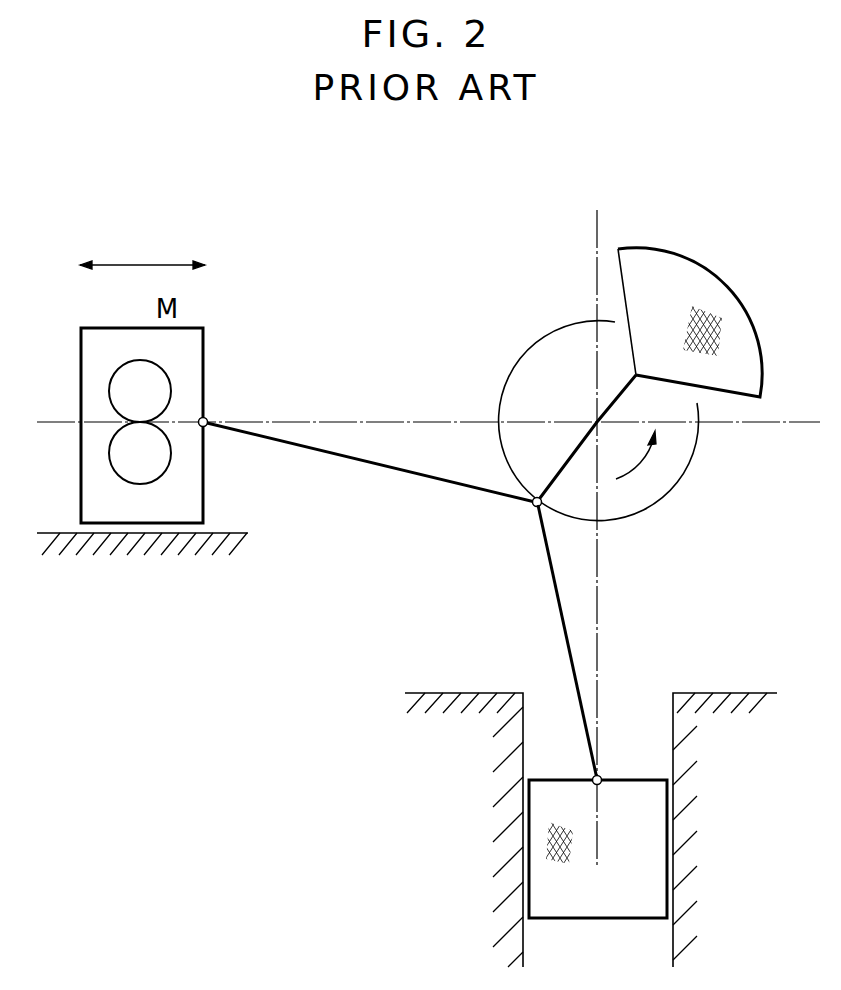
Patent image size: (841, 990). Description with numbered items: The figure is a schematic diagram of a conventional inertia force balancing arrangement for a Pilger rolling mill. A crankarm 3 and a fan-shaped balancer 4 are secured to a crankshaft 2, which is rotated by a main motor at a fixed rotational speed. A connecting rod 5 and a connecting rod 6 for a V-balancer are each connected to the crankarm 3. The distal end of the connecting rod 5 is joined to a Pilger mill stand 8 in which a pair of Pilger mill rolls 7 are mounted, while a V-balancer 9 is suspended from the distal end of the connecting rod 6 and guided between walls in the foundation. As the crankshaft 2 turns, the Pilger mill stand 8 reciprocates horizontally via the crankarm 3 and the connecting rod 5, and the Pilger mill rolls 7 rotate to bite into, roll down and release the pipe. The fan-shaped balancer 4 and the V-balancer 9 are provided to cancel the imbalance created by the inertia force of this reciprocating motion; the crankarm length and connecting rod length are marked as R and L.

The crankshaft 2 is at (588, 432).
The crankarm 3 is at (548, 481).
The fan-shaped balancer 4 is at (743, 353).
The connecting rod 5 is at (437, 484).
The connecting rod for V-balancer 6 is at (560, 617).
The Pilger mill rolls 7 is at (163, 378).
The Pilger mill stand 8 is at (81, 350).
The V-balancer 9 is at (628, 901).